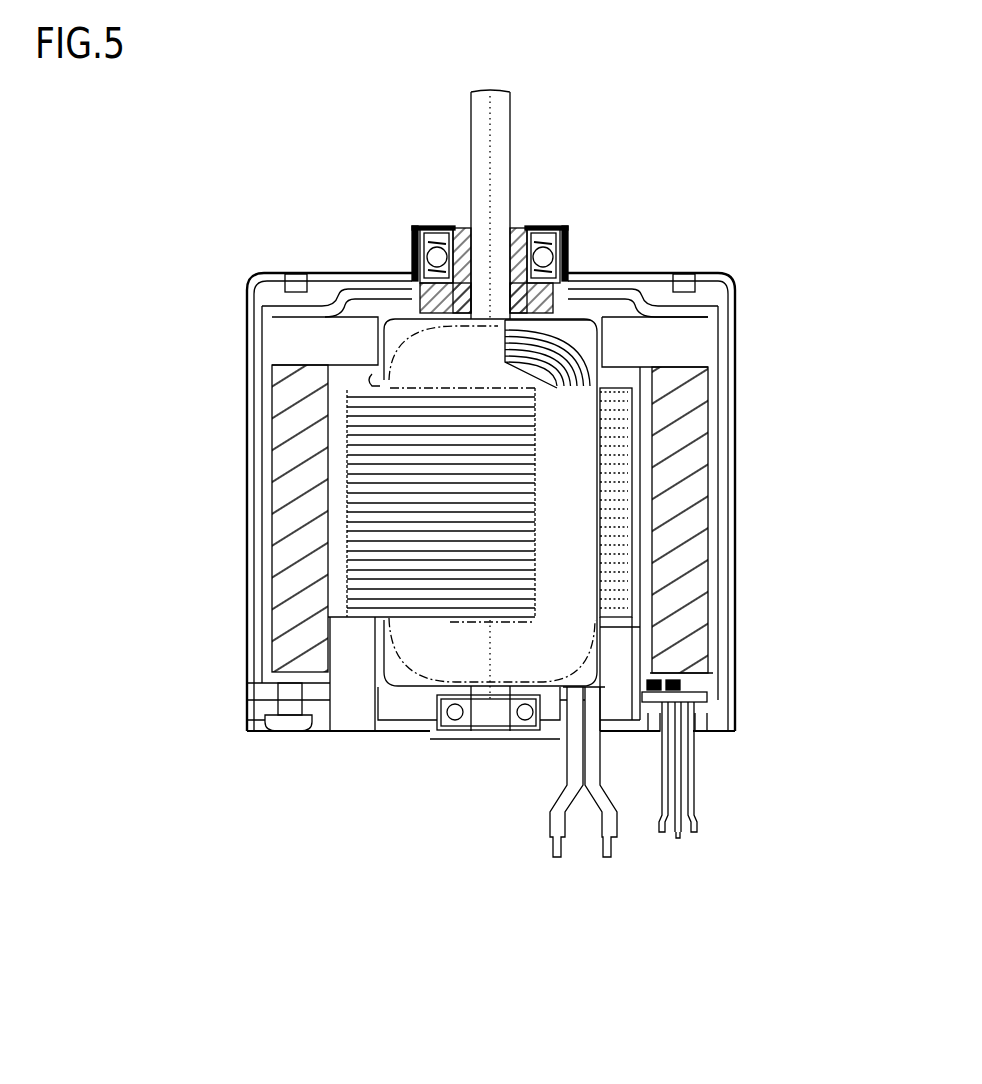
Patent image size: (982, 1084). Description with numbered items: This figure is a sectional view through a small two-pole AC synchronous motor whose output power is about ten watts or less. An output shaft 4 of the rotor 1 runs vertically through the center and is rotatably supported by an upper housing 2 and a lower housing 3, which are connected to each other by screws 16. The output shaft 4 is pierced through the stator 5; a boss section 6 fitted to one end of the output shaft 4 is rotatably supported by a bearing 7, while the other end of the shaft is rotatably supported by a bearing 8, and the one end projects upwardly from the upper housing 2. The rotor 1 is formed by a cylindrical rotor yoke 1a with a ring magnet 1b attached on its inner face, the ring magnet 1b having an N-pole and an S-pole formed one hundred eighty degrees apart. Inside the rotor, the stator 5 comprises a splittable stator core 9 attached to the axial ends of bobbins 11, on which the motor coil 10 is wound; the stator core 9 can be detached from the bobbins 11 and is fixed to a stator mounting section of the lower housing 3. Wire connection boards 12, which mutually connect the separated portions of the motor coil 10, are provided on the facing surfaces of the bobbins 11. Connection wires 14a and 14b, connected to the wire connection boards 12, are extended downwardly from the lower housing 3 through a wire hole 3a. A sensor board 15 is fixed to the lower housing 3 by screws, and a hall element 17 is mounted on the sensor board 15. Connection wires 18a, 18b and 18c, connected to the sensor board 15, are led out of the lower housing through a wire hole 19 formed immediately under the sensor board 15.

The rotor 1 is at (266, 290).
The rotor yoke 1a is at (717, 357).
The ring magnet 1b is at (697, 453).
The upper housing 2 is at (705, 272).
The lower housing 3 is at (333, 720).
The wire hole 3a is at (570, 745).
The output shaft 4 is at (510, 108).
The stator 5 is at (376, 367).
The boss section 6 is at (455, 228).
The bearing 7 is at (553, 238).
The bearing 8 is at (440, 740).
The stator core 9 is at (623, 560).
The motor coil 10 is at (583, 367).
The bobbin 11 is at (600, 335).
The wire connection board 12 is at (580, 320).
The connection wire 14a is at (550, 830).
The connection wire 14b is at (617, 832).
The sensor board 15 is at (707, 695).
The screw 16 is at (282, 731).
The hall element 17 is at (673, 683).
The connection wire 18a is at (663, 832).
The connection wire 18b is at (680, 838).
The connection wire 18c is at (697, 822).
The wire hole 19 is at (695, 748).